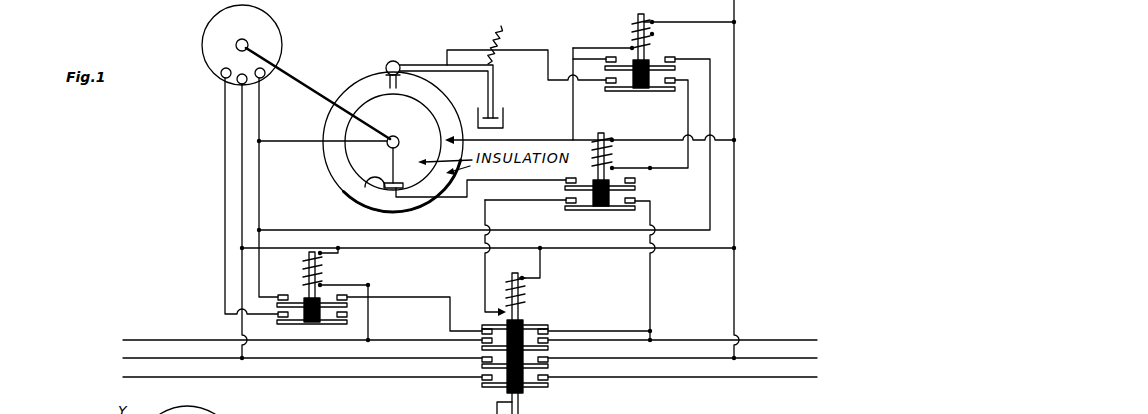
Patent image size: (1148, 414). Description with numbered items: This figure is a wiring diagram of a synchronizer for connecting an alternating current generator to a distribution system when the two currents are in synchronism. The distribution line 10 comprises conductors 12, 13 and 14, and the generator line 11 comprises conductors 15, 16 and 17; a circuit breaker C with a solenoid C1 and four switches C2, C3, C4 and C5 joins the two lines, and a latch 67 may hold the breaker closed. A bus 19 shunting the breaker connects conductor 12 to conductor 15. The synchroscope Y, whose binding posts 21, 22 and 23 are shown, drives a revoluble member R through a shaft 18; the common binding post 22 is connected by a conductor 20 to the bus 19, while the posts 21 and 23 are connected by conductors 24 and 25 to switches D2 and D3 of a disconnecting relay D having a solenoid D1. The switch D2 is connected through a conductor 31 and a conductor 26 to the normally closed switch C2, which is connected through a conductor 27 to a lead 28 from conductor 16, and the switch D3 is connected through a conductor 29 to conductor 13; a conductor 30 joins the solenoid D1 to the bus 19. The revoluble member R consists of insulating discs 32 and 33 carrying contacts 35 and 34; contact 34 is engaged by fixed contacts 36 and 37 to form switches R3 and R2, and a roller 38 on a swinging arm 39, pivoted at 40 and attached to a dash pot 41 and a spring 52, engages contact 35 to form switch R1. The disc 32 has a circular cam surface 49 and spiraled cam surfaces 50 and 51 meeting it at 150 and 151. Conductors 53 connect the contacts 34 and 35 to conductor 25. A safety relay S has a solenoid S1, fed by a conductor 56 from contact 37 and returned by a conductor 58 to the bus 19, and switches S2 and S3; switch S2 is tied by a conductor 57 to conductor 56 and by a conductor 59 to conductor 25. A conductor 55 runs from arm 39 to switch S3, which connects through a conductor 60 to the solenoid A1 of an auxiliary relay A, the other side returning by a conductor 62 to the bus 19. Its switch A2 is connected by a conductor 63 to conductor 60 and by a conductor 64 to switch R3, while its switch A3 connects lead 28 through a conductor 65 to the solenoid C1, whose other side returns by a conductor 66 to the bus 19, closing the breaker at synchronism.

The synchroscope Y is at (210, 33).
The shaft 18 is at (287, 66).
The binding post 21 is at (226, 68).
The common binding post 22 is at (237, 83).
The binding post 23 is at (260, 79).
The conductor 24 is at (225, 205).
The conductor 20 is at (242, 181).
The conductor 25 is at (258, 215).
The conductors 53 is at (287, 141).
The conductor 30 is at (322, 238).
The bus 19 is at (242, 270).
The disc 32 is at (322, 157).
The disc 33 is at (357, 158).
The cam surface 49 is at (322, 132).
The intersection point 150 is at (345, 82).
The intersection point 151 is at (432, 80).
The spiraled cam surface 50 is at (355, 80).
The revoluble member R is at (385, 124).
The switch R1 is at (402, 66).
The switch R2 is at (445, 141).
The switch R3 is at (400, 179).
The contact 34 is at (378, 182).
The fixed contact 36 is at (392, 195).
The fixed contact 37 is at (447, 138).
The contact 35 is at (386, 78).
The roller 38 is at (392, 60).
The swinging arm 39 is at (470, 66).
The spiraled cam surface 51 is at (420, 70).
The pivot 40 is at (440, 64).
The dash pot 41 is at (495, 110).
The spring 52 is at (505, 27).
The conductor 55 is at (546, 96).
The conductor 56 is at (573, 120).
The conductor 57 is at (590, 48).
The safety relay S is at (630, 42).
The solenoid S1 is at (652, 35).
The switch S2 is at (676, 58).
The switch S3 is at (680, 80).
The conductor 58 is at (734, 22).
The conductor 60 is at (690, 118).
The conductor 62 is at (722, 142).
The conductor 59 is at (712, 181).
The auxiliary relay A is at (620, 137).
The solenoid A1 is at (612, 155).
The conductor 63 is at (650, 168).
The switch A2 is at (637, 181).
The switch A3 is at (637, 201).
The lead 28 is at (652, 290).
The conductor 64 is at (547, 183).
The conductor 65 is at (508, 202).
The disconnecting relay D is at (293, 287).
The solenoid D1 is at (320, 270).
The switch D2 is at (345, 295).
The switch D3 is at (347, 318).
The conductor 31 is at (368, 298).
The conductor 29 is at (368, 312).
The conductor 26 is at (450, 312).
The circuit breaker C is at (525, 313).
The conductor 66 is at (540, 265).
The solenoid C1 is at (522, 297).
The switch C2 is at (483, 328).
The switch C3 is at (549, 330).
The switch C4 is at (481, 376).
The switch C5 is at (551, 380).
The conductor 27 is at (620, 330).
The latch 67 is at (497, 410).
The conductor 13 is at (163, 340).
The conductor 12 is at (145, 358).
The conductor 14 is at (200, 377).
The distribution line 10 is at (125, 367).
The conductor 16 is at (688, 340).
The conductor 17 is at (745, 377).
The generator line 11 is at (780, 348).
The conductor 15 is at (810, 358).